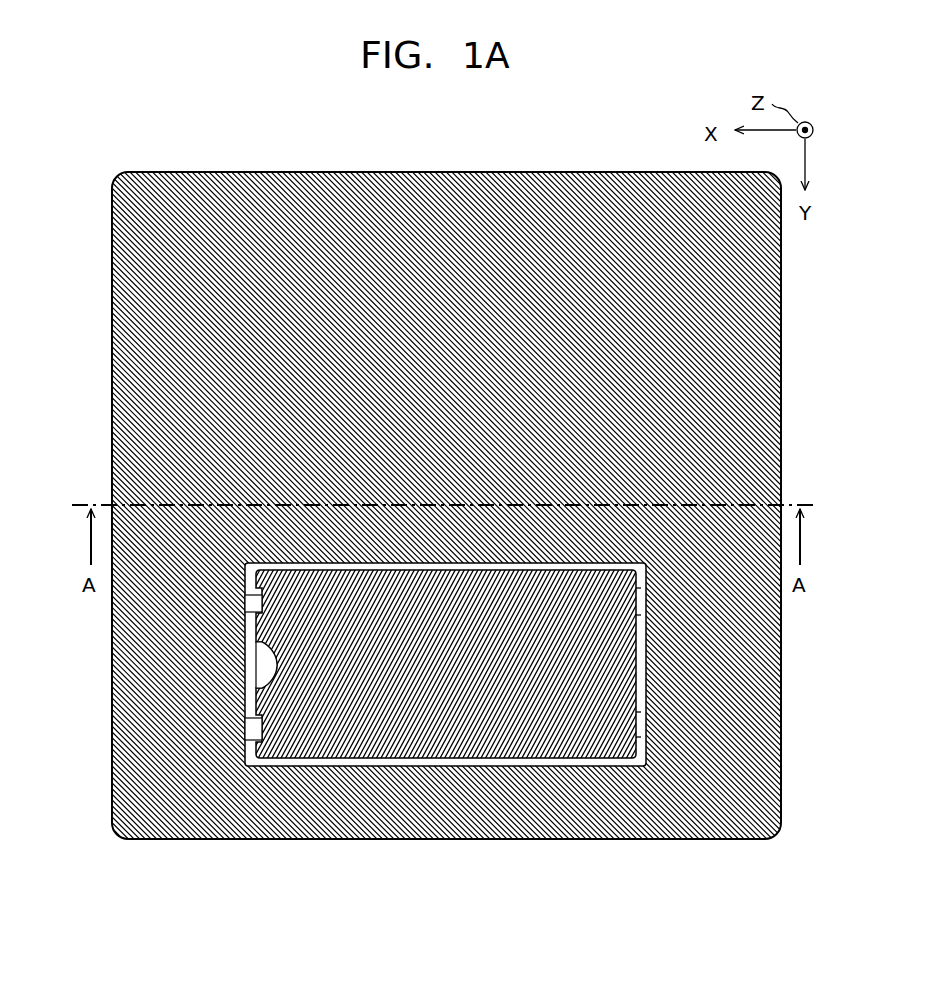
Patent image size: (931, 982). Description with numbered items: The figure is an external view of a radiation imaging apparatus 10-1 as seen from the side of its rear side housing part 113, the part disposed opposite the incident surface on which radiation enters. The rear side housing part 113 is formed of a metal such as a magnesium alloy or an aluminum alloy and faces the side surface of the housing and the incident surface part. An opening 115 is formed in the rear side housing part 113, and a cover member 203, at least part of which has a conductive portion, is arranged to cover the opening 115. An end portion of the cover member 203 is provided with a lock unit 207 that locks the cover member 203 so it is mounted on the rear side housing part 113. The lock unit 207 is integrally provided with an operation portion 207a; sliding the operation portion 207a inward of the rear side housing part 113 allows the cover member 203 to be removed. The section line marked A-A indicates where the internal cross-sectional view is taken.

The radiation imaging apparatus 10-1 is at (250, 165).
The rear side housing part 113 is at (356, 818).
The cover member 203 is at (445, 719).
The opening 115 is at (477, 752).
The lock unit 207 is at (258, 733).
The operation portion 207a is at (266, 660).